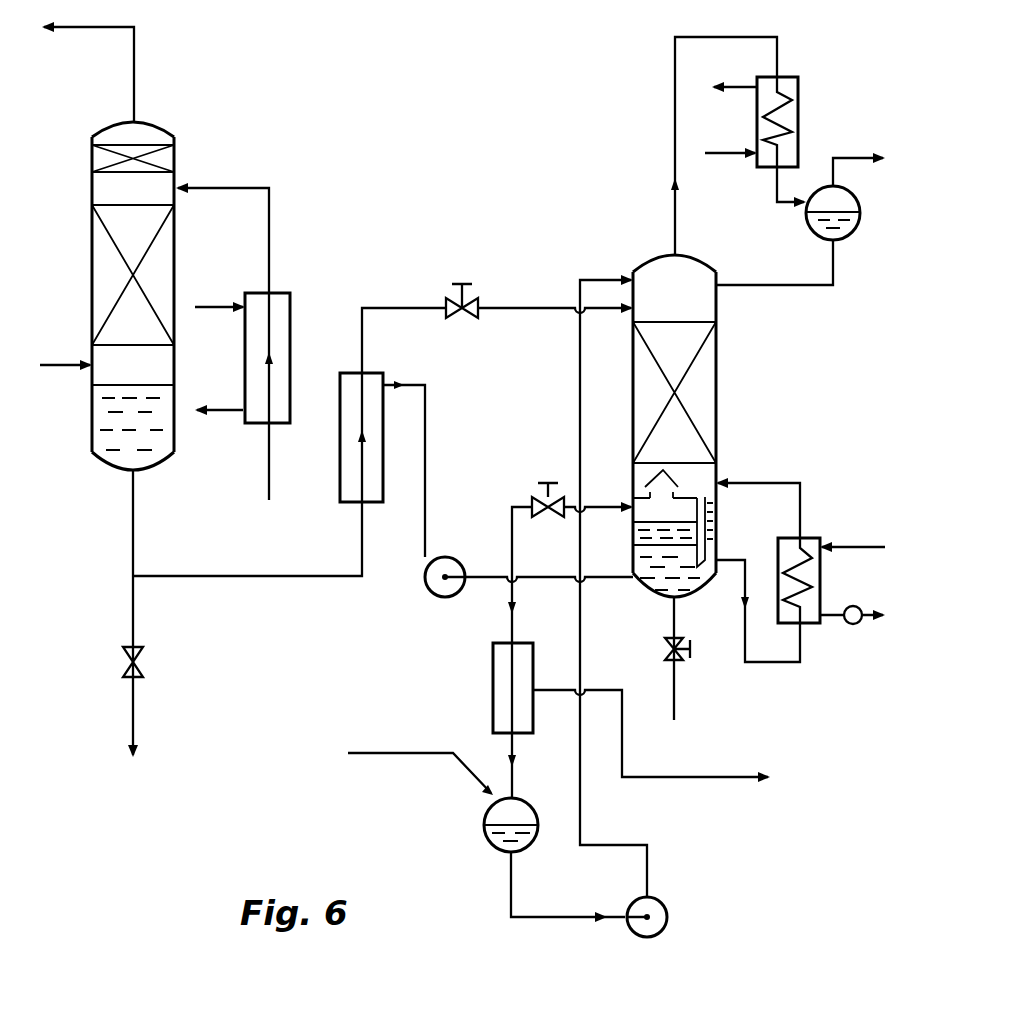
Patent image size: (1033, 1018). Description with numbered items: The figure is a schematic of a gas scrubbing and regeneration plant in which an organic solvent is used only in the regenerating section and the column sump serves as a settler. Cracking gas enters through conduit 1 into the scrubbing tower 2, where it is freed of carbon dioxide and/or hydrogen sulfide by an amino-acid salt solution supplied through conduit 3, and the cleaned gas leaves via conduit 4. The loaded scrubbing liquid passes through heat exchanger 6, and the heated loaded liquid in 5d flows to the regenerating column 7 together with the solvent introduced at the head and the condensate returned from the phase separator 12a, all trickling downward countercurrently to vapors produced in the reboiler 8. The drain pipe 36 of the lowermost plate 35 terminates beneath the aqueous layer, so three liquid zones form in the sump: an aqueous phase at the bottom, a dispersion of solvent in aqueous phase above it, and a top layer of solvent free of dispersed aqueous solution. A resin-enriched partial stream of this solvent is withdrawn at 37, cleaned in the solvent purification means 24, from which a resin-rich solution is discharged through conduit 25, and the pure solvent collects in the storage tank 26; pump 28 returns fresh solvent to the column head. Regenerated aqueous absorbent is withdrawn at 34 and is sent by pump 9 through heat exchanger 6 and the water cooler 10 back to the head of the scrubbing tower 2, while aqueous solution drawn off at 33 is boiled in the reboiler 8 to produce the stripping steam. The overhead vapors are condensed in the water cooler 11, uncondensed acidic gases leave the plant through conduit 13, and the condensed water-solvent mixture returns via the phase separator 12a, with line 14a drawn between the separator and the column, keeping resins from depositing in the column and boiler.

The conduit 1 is at (58, 365).
The scrubbing tower 2 is at (174, 249).
The conduit 3 is at (239, 185).
The conduit 4 is at (137, 72).
The conduit 5d is at (248, 578).
The heat exchanger 6 is at (339, 460).
The regenerating column 7 is at (717, 398).
The reboiler 8 is at (820, 576).
The pump 9 is at (453, 557).
The water cooled heat exchanger 10 is at (291, 332).
The water cooler 11 is at (800, 105).
The phase separator 12a is at (812, 232).
The conduit 13 is at (855, 155).
The reflux line 14a is at (787, 288).
The solvent purification means 24 is at (493, 707).
The conduit 25 is at (707, 777).
The storage tank 26 is at (484, 830).
The pump 28 is at (648, 938).
The withdrawal point 33 is at (715, 562).
The withdrawal point 34 is at (628, 580).
The lowermost plate 35 is at (636, 493).
The drain pipe 36 is at (703, 513).
The withdrawal point 37 is at (630, 508).